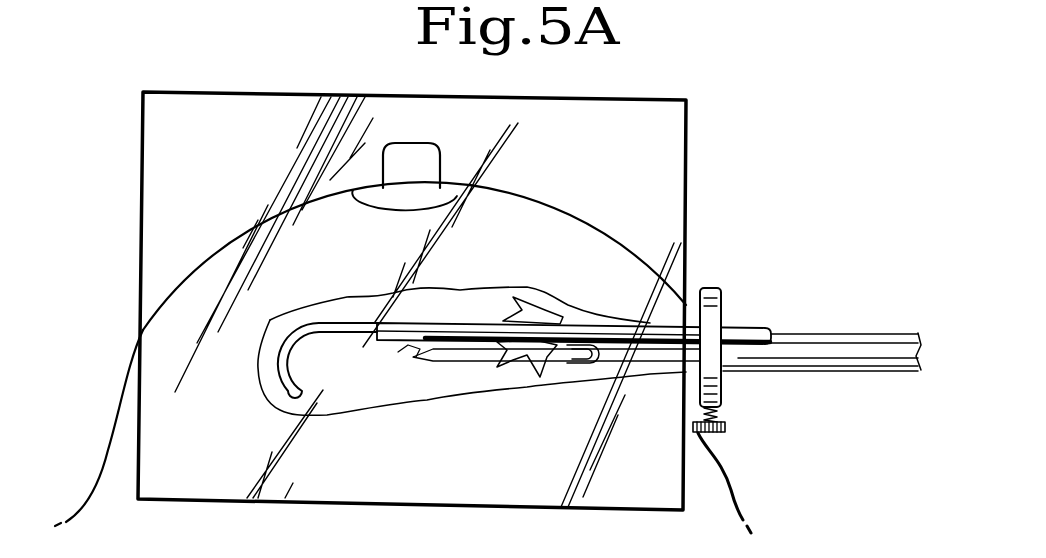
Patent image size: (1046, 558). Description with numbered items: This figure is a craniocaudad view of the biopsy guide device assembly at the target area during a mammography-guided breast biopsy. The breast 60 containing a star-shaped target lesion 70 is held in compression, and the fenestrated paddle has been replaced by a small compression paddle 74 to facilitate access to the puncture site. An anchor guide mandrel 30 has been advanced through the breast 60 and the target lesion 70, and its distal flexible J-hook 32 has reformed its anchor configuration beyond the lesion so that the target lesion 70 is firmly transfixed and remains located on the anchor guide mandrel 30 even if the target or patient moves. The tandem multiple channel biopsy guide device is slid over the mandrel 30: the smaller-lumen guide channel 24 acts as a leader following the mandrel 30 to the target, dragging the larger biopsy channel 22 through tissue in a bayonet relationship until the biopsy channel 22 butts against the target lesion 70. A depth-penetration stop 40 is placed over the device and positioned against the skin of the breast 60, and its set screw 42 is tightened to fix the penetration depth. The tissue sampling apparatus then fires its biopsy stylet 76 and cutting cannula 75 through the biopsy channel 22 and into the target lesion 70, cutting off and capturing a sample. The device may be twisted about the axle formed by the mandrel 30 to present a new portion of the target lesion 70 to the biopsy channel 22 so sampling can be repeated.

The biopsy channel 22 is at (810, 366).
The guide channel 24 is at (742, 328).
The anchor guide mandrel 30 is at (832, 332).
The J-hook 32 is at (283, 384).
The depth-penetration stop 40 is at (722, 383).
The set screw 42 is at (725, 432).
The breast 60 is at (559, 215).
The target lesion 70 is at (547, 297).
The small compression paddle 74 is at (688, 167).
The cutting cannula 75 is at (463, 353).
The biopsy stylet 76 is at (398, 352).